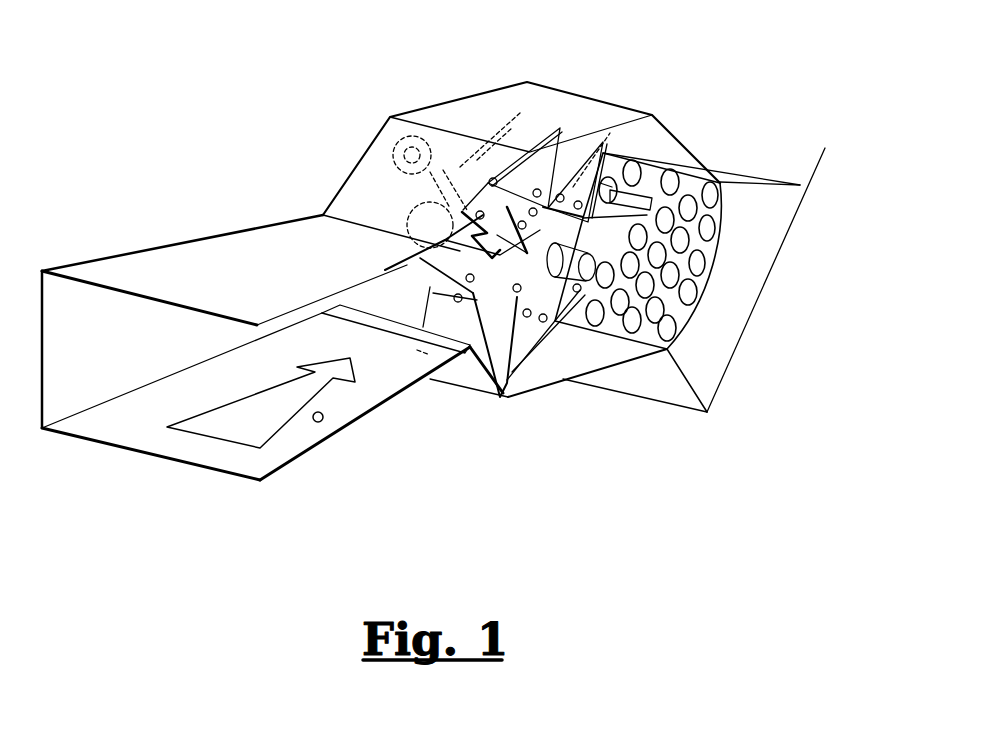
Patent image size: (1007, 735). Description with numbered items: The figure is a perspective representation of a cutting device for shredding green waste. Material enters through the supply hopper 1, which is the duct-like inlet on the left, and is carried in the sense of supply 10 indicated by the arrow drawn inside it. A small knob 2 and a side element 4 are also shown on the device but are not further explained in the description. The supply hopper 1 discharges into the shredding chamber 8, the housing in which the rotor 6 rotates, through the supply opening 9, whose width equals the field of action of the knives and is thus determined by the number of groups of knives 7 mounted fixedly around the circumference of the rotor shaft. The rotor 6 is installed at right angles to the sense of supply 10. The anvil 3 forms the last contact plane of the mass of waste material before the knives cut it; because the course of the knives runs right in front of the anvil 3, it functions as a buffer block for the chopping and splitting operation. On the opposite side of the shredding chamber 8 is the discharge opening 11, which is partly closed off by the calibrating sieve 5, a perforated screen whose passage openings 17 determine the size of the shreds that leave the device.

The supply hopper 1 is at (275, 384).
The knob 2 is at (282, 473).
The anvil 3 is at (496, 291).
The housing side wall 4 is at (737, 269).
The calibrating sieve 5 is at (664, 236).
The rotor 6 is at (636, 182).
The groups of knives 7 is at (647, 136).
The shredding chamber 8 is at (521, 223).
The supply opening 9 is at (501, 186).
The sense of supply 10 is at (221, 438).
The discharge opening 11 is at (634, 305).
The passage openings 17 is at (765, 277).